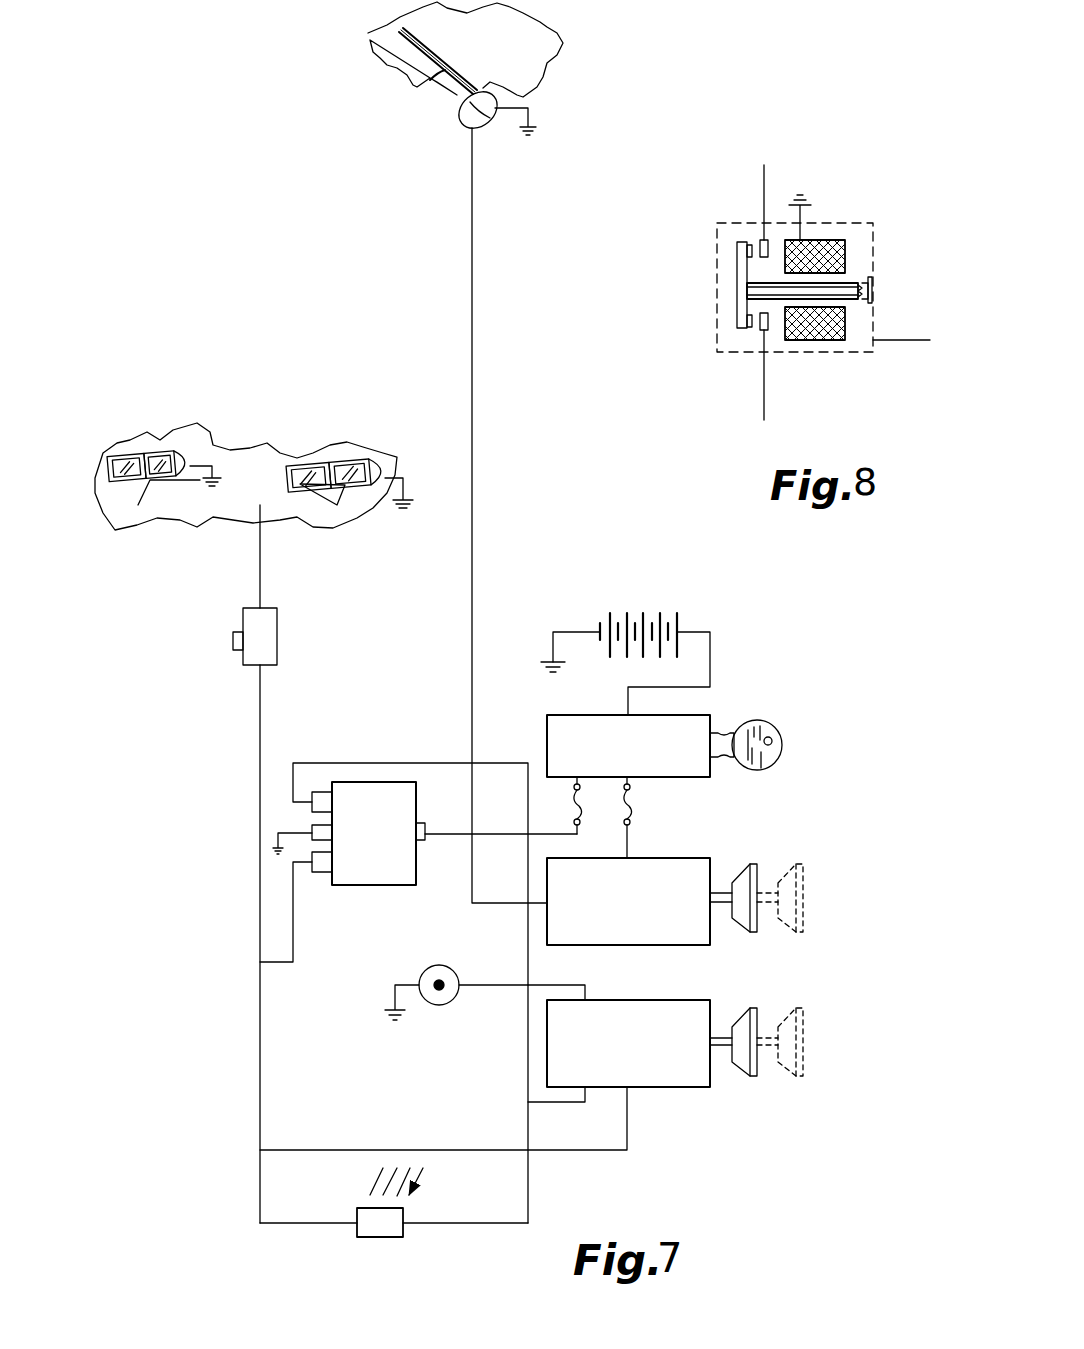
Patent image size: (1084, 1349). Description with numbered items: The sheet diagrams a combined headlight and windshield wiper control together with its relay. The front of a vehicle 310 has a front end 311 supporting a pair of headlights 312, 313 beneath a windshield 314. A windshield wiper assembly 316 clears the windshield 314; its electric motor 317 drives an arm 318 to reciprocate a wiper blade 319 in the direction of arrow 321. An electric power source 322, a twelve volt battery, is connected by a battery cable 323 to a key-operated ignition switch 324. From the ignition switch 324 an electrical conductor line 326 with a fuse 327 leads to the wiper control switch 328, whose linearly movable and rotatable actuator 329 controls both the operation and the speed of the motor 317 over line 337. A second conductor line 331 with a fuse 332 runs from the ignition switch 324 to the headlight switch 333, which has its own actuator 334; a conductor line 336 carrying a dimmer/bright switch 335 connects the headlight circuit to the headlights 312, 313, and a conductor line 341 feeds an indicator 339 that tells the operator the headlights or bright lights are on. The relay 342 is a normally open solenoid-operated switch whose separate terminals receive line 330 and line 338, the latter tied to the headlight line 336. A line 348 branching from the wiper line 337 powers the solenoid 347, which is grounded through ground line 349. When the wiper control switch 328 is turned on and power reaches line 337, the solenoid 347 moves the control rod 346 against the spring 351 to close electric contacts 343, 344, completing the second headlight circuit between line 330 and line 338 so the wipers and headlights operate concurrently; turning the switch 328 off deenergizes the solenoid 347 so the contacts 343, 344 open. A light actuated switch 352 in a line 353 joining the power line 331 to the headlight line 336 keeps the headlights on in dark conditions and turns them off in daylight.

In FIG. 7, the vehicle 310 is at (390, 148).
In FIG. 7, the front end 311 is at (222, 440).
In FIG. 7, the headlight 312 is at (130, 463).
In FIG. 7, the headlight 313 is at (317, 468).
In FIG. 7, the windshield 314 is at (442, 80).
In FIG. 7, the windshield wiper assembly 316 is at (504, 83).
In FIG. 7, the electric motor 317 is at (481, 128).
In FIG. 7, the arm 318 is at (423, 60).
In FIG. 7, the wiper blade 319 is at (512, 42).
In FIG. 7, the arrow 321 is at (420, 60).
In FIG. 7, the electric power source 322 is at (658, 615).
In FIG. 7, the battery cable 323 is at (710, 662).
In FIG. 7, the ignition switch 324 is at (547, 722).
In FIG. 7, the electrical conductor line 326 is at (630, 831).
In FIG. 7, the fuse 327 is at (631, 798).
In FIG. 7, the wiper control switch 328 is at (690, 945).
In FIG. 7, the actuator 329 is at (745, 877).
In FIG. 7, the line 330 is at (447, 763).
In FIG. 8, the line 330 is at (771, 182).
In FIG. 7, the conductor line 331 is at (528, 937).
In FIG. 7, the fuse 332 is at (579, 813).
In FIG. 7, the headlight switch 333 is at (663, 1080).
In FIG. 7, the actuator 334 is at (745, 1078).
In FIG. 7, the dimmer/bright switch 335 is at (277, 638).
In FIG. 7, the conductor line 336 is at (330, 1150).
In FIG. 7, the line 337 is at (474, 319).
In FIG. 7, the line 338 is at (268, 962).
In FIG. 8, the line 338 is at (765, 398).
In FIG. 7, the indicator 339 is at (430, 968).
In FIG. 7, the conductor line 341 is at (466, 988).
In FIG. 7, the relay 342 is at (368, 755).
In FIG. 8, the relay 342 is at (730, 178).
In FIG. 8, the electric contact 343 is at (748, 237).
In FIG. 8, the electric contact 344 is at (748, 333).
In FIG. 8, the control rod 346 is at (850, 300).
In FIG. 8, the solenoid 347 is at (845, 237).
In FIG. 7, the line 348 is at (461, 836).
In FIG. 8, the line 348 is at (890, 340).
In FIG. 8, the ground line 349 is at (807, 217).
In FIG. 8, the spring 351 is at (867, 287).
In FIG. 7, the light actuated switch 352 is at (357, 1215).
In FIG. 7, the line 353 is at (500, 1223).